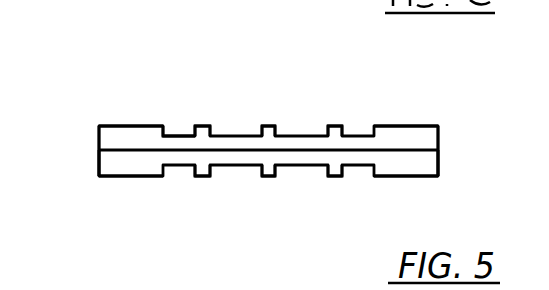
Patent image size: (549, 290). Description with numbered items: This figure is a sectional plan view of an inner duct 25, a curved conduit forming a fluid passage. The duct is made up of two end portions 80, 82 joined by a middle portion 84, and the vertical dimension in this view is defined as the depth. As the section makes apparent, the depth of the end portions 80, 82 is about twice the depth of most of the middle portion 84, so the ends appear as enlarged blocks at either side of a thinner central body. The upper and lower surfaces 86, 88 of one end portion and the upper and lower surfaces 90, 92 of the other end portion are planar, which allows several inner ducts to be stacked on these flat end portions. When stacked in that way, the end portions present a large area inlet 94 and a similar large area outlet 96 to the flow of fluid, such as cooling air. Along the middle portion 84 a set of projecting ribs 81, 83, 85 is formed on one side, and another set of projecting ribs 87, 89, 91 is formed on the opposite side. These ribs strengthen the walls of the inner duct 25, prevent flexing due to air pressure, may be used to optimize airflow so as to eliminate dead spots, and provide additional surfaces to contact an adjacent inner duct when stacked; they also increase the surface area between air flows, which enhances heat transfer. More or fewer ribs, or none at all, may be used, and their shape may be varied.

The inner duct 25 is at (185, 47).
The end portion 80 is at (84, 138).
The projecting rib 81 is at (204, 126).
The end portion 82 is at (457, 135).
The projecting rib 83 is at (270, 126).
The middle portion 84 is at (179, 120).
The projecting rib 85 is at (338, 126).
The upper surface 86 is at (122, 125).
The projecting rib 87 is at (233, 187).
The lower surface 88 is at (141, 181).
The projecting rib 89 is at (313, 177).
The upper surface 90 is at (401, 126).
The projecting rib 91 is at (320, 182).
The lower surface 92 is at (407, 181).
The inlet 94 is at (440, 170).
The outlet 96 is at (99, 169).